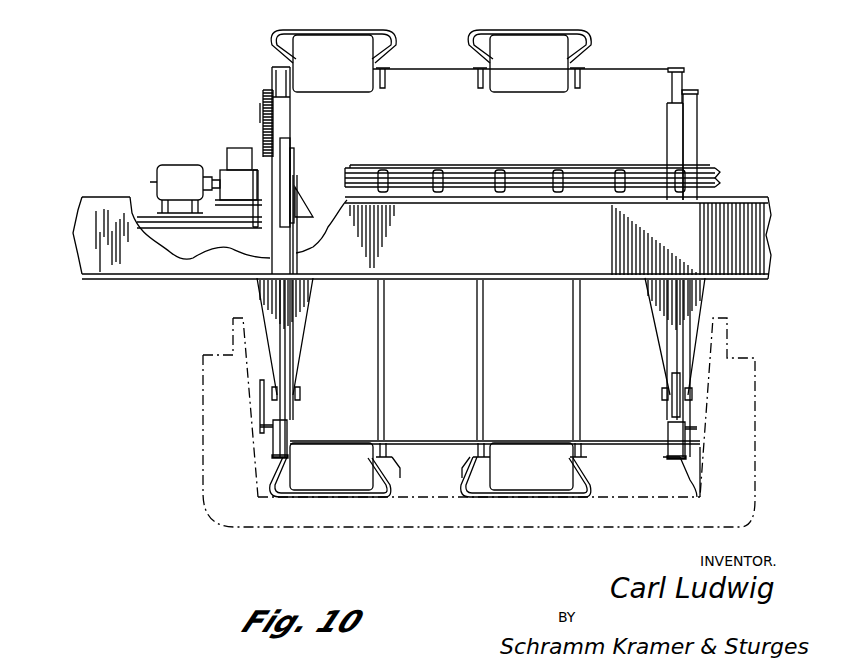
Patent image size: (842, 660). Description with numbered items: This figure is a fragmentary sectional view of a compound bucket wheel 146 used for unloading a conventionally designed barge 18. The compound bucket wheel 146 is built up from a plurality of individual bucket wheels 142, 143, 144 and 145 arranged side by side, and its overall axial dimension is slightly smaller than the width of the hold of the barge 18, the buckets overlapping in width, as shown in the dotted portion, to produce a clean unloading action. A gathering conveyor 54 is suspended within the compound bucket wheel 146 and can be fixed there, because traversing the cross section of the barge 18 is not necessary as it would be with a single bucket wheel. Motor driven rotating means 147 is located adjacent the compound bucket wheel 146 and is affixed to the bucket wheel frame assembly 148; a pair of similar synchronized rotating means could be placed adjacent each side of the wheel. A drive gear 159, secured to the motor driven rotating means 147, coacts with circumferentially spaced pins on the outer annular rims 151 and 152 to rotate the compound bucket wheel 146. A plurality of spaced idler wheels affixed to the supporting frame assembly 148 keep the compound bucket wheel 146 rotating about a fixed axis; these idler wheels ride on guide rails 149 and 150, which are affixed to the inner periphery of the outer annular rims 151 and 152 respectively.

The barge 18 is at (747, 447).
The gathering conveyor 54 is at (464, 166).
The bucket wheel 142 is at (478, 367).
The bucket wheel 143 is at (446, 360).
The bucket wheel 144 is at (541, 360).
The bucket wheel 145 is at (651, 367).
The compound bucket wheel 146 is at (616, 94).
The motor driven rotating means 147 is at (174, 164).
The bucket wheel frame assembly 148 is at (127, 280).
The guide rail 149 is at (674, 418).
The guide rail 150 is at (288, 421).
The outer annular rim 151 is at (698, 389).
The outer annular rim 152 is at (260, 395).
The drive gear 159 is at (267, 152).